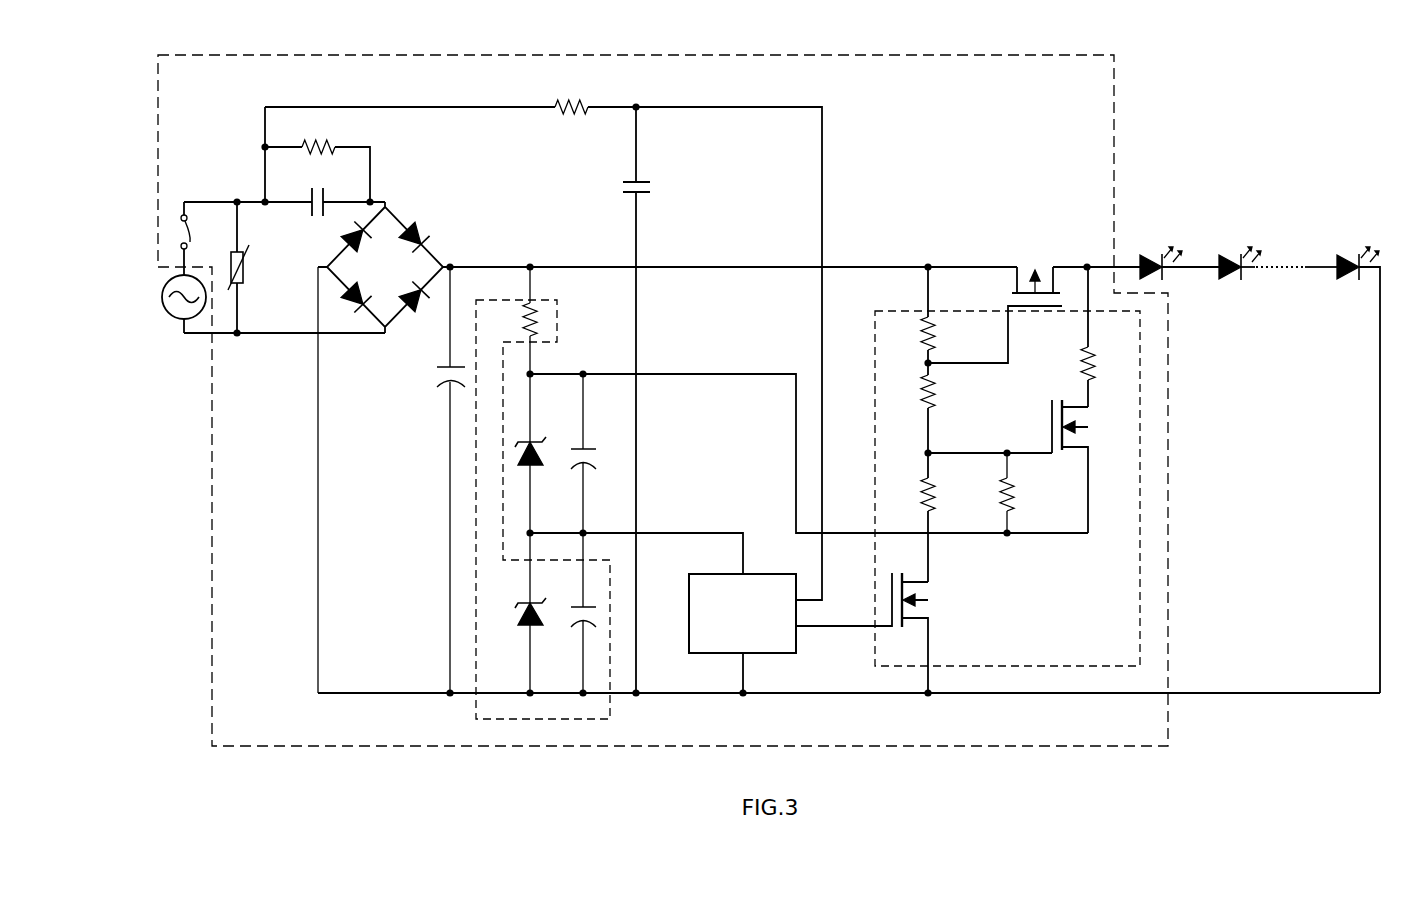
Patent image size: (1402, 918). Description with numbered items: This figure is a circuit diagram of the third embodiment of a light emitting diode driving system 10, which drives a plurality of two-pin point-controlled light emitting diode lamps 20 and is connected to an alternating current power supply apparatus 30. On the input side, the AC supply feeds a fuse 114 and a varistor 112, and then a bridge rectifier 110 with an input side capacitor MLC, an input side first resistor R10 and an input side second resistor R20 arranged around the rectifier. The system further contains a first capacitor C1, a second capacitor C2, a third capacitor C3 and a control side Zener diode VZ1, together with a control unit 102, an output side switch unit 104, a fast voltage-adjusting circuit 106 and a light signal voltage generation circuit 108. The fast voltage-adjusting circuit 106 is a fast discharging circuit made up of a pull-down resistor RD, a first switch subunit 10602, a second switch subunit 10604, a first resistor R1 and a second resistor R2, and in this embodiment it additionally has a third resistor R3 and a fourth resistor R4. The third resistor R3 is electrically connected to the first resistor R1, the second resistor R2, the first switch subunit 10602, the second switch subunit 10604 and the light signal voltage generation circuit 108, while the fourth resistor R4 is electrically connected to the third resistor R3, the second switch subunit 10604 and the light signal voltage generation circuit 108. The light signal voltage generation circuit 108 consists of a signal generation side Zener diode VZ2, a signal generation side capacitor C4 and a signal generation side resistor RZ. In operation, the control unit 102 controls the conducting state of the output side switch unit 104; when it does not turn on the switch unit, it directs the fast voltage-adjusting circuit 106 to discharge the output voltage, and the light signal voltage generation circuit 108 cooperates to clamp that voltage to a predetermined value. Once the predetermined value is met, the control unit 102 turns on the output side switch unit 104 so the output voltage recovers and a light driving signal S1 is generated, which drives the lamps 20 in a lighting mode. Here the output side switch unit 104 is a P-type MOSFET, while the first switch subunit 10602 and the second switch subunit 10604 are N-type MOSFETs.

The light emitting diode driving system 10 is at (637, 62).
The two-pin point-controlled light emitting diode lamps 20 is at (1357, 227).
The alternating current power supply apparatus 30 is at (168, 291).
The control unit 102 is at (706, 578).
The output side switch unit 104 is at (1076, 266).
The fast voltage-adjusting circuit 106 is at (876, 648).
The first switch subunit 10602 is at (944, 635).
The second switch subunit 10604 is at (1103, 466).
The light signal voltage generation circuit 108 is at (477, 704).
The bridge rectifier 110 is at (386, 267).
The varistor 112 is at (256, 269).
The fuse 114 is at (205, 228).
The light driving signal S1 is at (1123, 265).
The input side first resistor R10 is at (315, 156).
The input side second resistor R20 is at (543, 336).
The input side capacitor MLC is at (284, 190).
The first capacitor C1 is at (435, 482).
The second capacitor C2 is at (654, 402).
The third capacitor C3 is at (600, 453).
The signal generation side capacitor C4 is at (600, 615).
The signal generation side resistor RZ is at (510, 322).
The control side Zener diode VZ1 is at (508, 455).
The signal generation side Zener diode VZ2 is at (508, 615).
The first resistor R1 is at (945, 314).
The second resistor R2 is at (945, 410).
The third resistor R3 is at (945, 517).
The fourth resistor R4 is at (1024, 491).
The pull-down resistor RD is at (1105, 337).